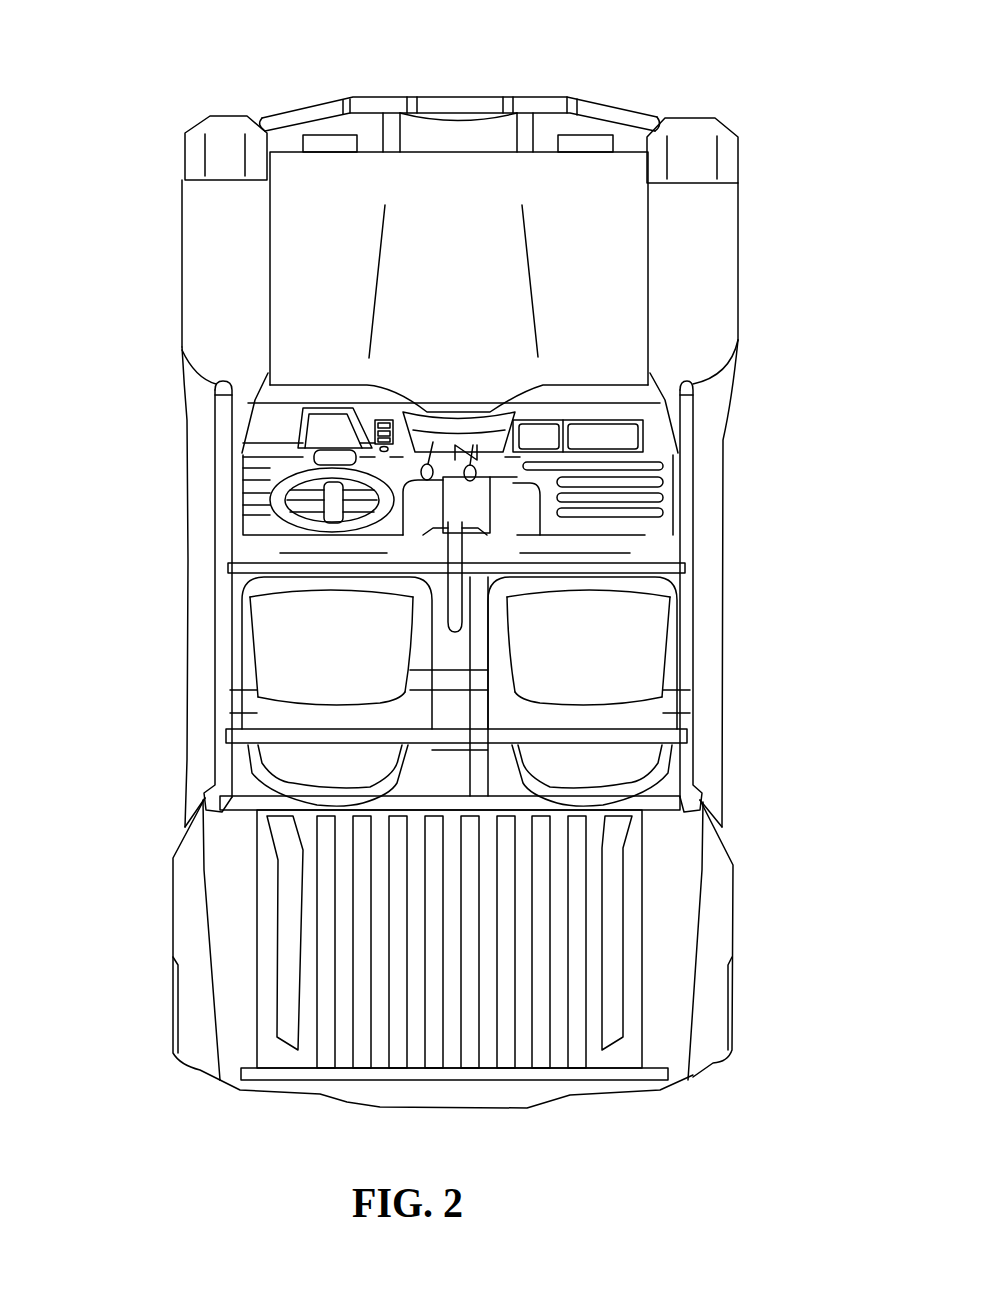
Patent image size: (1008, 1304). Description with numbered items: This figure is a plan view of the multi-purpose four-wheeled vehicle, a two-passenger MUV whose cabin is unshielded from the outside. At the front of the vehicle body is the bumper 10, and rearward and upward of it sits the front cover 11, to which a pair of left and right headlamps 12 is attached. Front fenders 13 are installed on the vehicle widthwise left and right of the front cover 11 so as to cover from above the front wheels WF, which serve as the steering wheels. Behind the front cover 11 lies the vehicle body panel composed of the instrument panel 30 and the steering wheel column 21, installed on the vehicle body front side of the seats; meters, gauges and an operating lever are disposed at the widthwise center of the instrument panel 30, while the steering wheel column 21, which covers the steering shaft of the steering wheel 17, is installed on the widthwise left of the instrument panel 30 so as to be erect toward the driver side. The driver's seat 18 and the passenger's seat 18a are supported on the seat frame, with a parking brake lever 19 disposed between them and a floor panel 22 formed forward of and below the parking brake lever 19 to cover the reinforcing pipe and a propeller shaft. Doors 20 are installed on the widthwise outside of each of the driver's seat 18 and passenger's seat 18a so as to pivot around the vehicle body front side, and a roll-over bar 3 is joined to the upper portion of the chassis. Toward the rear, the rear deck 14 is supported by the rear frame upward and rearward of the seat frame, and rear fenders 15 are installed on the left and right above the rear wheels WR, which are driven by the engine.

The roll-over bar 3 is at (694, 638).
The bumper 10 is at (452, 104).
The front cover 11 is at (487, 210).
The headlamps 12 is at (327, 143).
The front fenders 13 is at (202, 283).
The rear deck 14 is at (547, 938).
The rear fenders 15 is at (190, 913).
The steering wheel 17 is at (320, 482).
The driver's seat 18 is at (290, 666).
The passenger's seat 18a is at (627, 673).
The parking brake lever 19 is at (455, 605).
The doors 20 is at (200, 555).
The steering wheel column 21 is at (330, 426).
The floor panel 22 is at (470, 508).
The instrument panel 30 is at (486, 480).
The front wheels WF is at (193, 163).
The rear wheels WR is at (187, 1052).